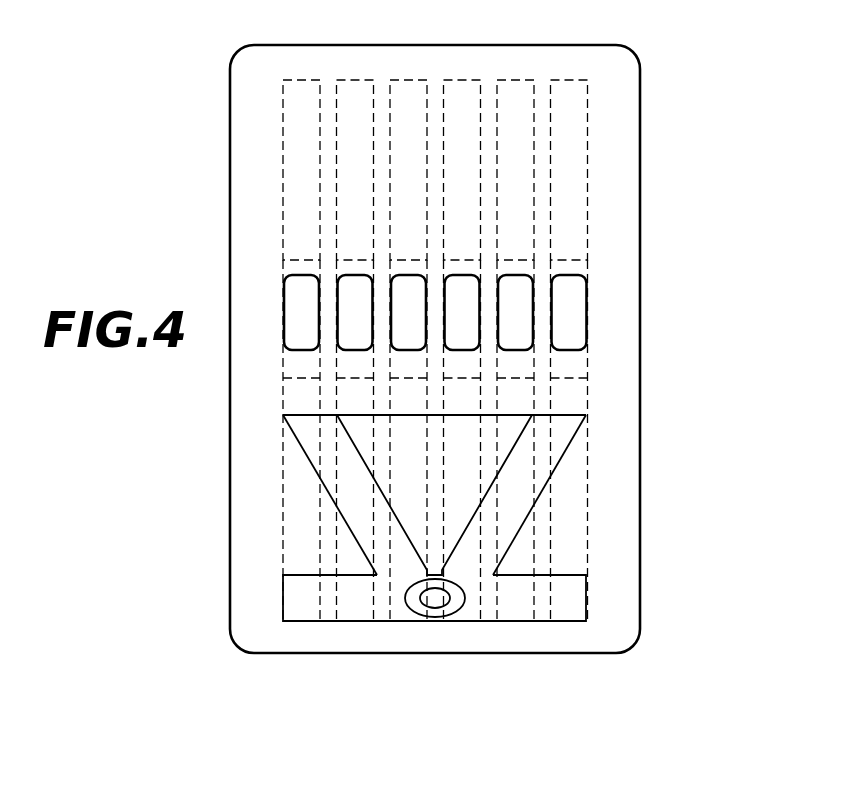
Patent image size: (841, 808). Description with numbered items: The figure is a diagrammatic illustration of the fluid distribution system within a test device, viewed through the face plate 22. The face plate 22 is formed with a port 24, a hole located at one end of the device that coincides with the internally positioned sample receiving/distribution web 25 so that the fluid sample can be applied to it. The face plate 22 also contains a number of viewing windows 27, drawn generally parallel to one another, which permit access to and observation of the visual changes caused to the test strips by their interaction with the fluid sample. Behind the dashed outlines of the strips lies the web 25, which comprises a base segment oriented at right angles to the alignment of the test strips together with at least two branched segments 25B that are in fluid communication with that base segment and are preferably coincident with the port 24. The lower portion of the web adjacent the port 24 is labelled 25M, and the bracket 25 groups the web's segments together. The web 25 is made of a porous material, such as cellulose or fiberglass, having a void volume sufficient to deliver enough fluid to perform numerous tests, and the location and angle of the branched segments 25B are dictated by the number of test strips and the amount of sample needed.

The face plate 22 is at (676, 139).
The port 24 is at (435, 603).
The sample receiving/distribution web 25 is at (440, 548).
The branched segments 25B is at (310, 428).
The mounting plate 25M is at (500, 628).
The viewing windows 27 is at (570, 318).